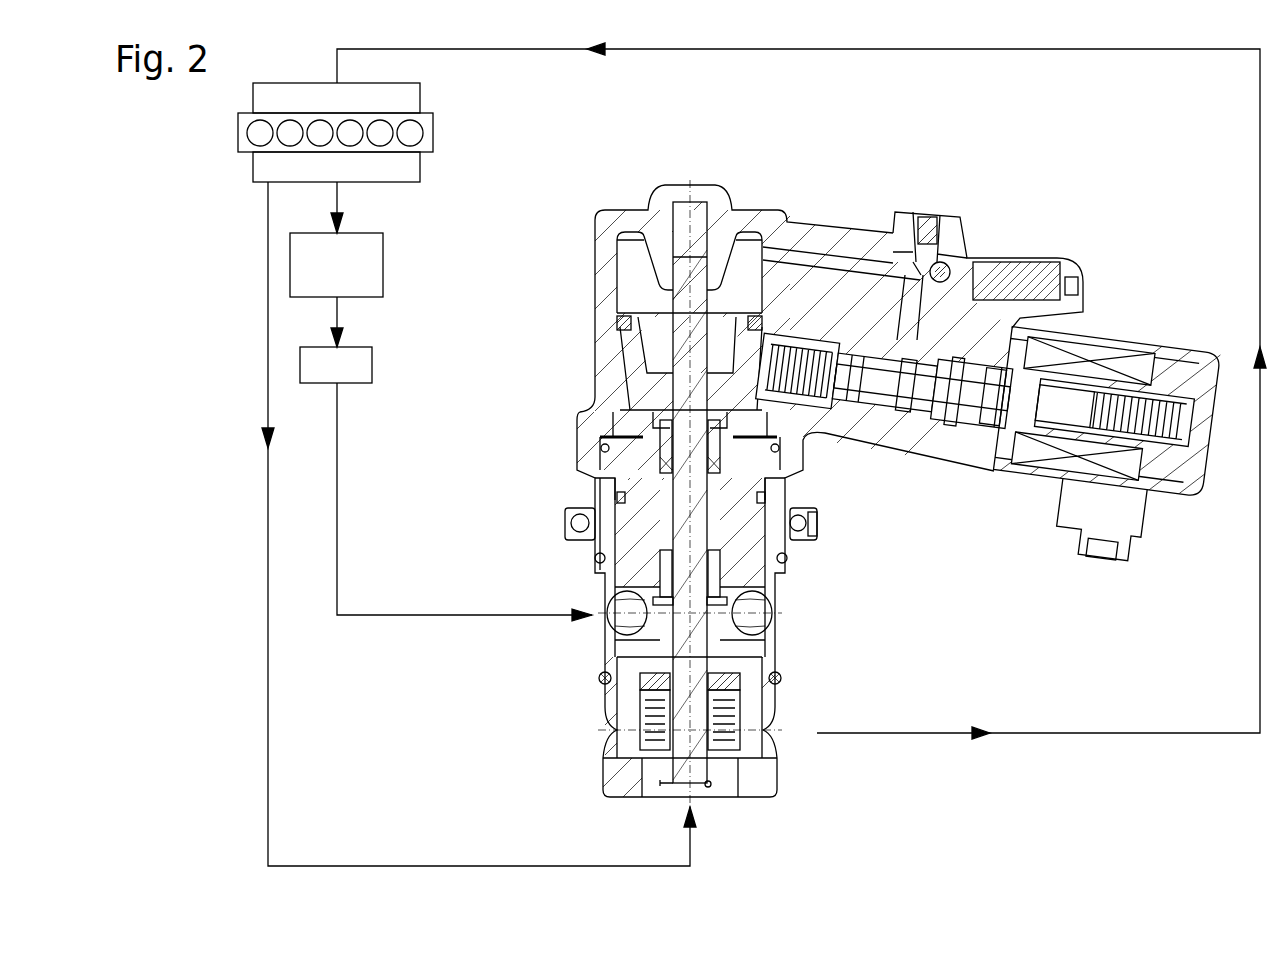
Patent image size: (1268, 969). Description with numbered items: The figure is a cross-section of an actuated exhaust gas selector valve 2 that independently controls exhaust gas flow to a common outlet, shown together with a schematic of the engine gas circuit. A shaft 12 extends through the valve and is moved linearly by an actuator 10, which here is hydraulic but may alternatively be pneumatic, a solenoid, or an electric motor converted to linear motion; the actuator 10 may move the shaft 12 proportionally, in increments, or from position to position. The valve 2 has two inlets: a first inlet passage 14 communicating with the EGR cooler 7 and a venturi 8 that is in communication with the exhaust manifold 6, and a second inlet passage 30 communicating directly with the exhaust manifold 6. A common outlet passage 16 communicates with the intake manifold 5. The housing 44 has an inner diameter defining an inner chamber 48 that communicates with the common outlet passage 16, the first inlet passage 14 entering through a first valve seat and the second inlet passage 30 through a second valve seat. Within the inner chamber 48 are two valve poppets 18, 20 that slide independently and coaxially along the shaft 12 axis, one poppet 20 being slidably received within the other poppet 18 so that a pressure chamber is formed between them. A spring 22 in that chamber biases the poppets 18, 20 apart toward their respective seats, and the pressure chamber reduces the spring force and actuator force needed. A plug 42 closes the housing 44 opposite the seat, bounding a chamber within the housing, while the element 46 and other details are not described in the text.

The exhaust gas selector valve 2 is at (661, 492).
The intake manifold 5 is at (410, 102).
The exhaust manifold 6 is at (405, 167).
The EGR cooler 7 is at (377, 248).
The venturi 8 is at (363, 353).
The actuator 10 is at (1092, 327).
The shaft 12 is at (672, 343).
The first inlet passage 14 is at (618, 600).
The common outlet passage 16 is at (767, 718).
The valve poppet 18 is at (627, 715).
The valve poppet 20 is at (627, 673).
The spring 22 is at (720, 693).
The second inlet passage 30 is at (657, 800).
The plug 42 is at (745, 517).
The housing 44 is at (607, 547).
The end cap 46 is at (777, 773).
The inner chamber 48 is at (750, 750).